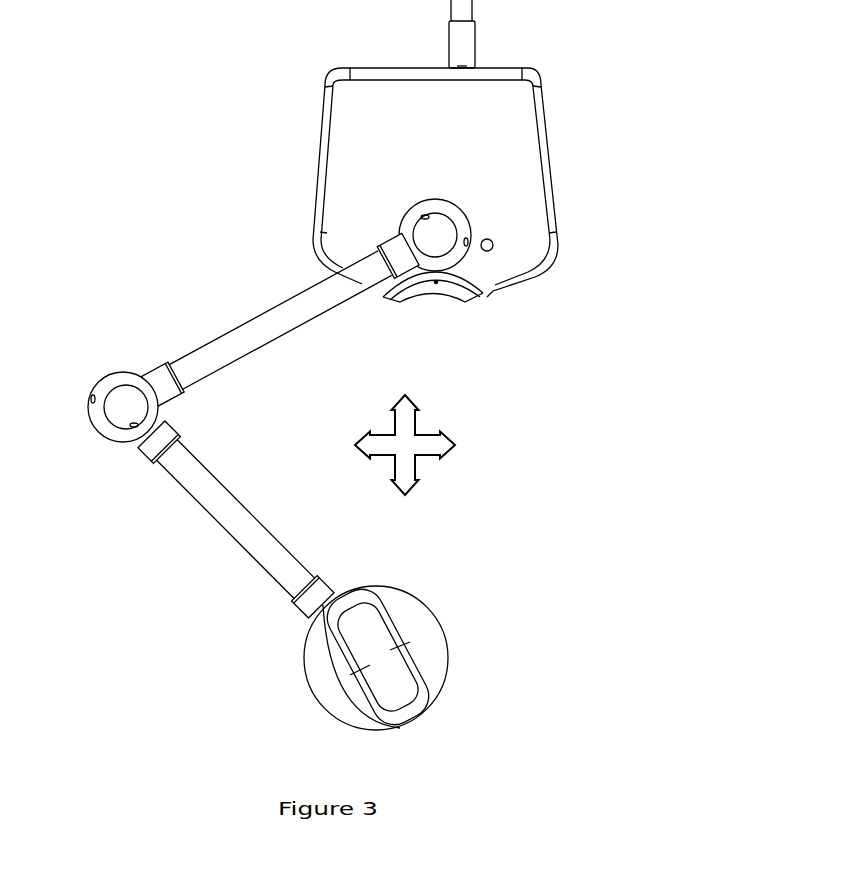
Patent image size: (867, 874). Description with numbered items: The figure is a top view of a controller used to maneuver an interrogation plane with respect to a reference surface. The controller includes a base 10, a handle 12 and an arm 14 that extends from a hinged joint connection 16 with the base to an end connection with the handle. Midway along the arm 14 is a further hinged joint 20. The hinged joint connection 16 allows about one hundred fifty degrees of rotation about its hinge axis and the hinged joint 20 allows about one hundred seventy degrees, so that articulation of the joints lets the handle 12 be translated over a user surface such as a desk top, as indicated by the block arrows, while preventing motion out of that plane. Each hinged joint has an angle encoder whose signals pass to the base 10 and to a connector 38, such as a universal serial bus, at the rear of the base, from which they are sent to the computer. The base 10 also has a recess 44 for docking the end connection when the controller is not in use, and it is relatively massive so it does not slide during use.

The base 10 is at (508, 147).
The handle 12 is at (405, 660).
The arm 14 is at (235, 520).
The hinged joint connection 16 is at (462, 216).
The hinged joint 20 is at (113, 380).
The connector 38 is at (462, 13).
The recess 44 is at (441, 296).